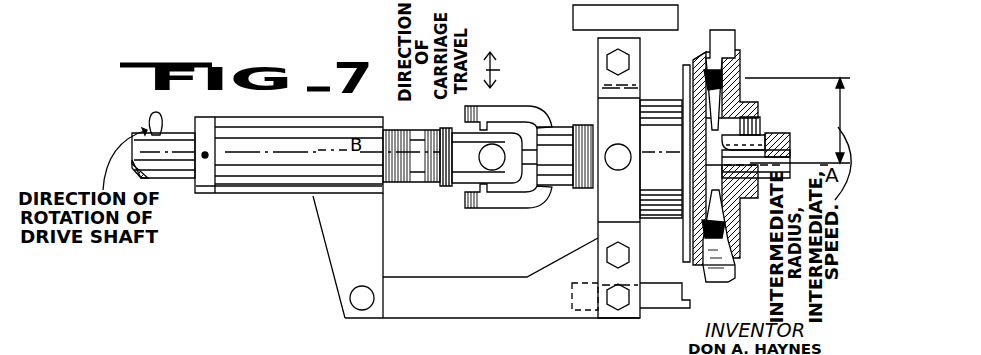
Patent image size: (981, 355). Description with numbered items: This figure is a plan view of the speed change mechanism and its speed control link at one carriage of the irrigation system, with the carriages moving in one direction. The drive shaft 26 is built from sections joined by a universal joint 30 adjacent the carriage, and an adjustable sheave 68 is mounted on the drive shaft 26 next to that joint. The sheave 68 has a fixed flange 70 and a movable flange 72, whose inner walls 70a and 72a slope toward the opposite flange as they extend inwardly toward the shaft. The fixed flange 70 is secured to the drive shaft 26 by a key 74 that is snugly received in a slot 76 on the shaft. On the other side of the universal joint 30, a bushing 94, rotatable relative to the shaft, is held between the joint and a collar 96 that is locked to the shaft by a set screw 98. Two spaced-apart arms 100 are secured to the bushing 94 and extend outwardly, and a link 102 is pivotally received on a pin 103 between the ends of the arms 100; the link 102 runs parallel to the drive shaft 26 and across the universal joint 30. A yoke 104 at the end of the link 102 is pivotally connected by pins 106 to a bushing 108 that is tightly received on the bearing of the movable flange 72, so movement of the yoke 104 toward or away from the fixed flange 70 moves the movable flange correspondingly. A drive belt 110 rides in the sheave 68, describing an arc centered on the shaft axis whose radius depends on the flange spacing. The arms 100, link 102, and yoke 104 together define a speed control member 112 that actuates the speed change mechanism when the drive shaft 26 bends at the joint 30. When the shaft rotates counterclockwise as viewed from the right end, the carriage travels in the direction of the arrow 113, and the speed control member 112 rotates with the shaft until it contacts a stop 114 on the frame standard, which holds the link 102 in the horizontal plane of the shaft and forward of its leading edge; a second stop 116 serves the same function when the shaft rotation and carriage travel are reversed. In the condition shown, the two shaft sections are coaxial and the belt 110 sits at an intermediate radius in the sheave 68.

The drive shaft 26 is at (170, 132).
The universal joint 30 is at (487, 197).
The adjustable sheave 68 is at (749, 56).
The fixed flange 70 is at (737, 72).
The inner wall of fixed flange 70a is at (723, 270).
The movable flange 72 is at (694, 68).
The inner wall of movable flange 72a is at (700, 55).
The key 74 is at (729, 120).
The slot 76 is at (752, 130).
The bushing 94 is at (270, 198).
The collar 96 is at (205, 120).
The set screw 98 is at (208, 155).
The arms 100 is at (330, 242).
The link 102 is at (462, 272).
The pin 103 is at (350, 300).
The yoke 104 is at (596, 70).
The pins 106 is at (618, 144).
The bushing 108 is at (661, 171).
The drive belt 110 is at (718, 48).
The speed control member 112 is at (407, 321).
The arrow 113 is at (518, 73).
The stop 114 is at (690, 297).
The stop 116 is at (680, 14).